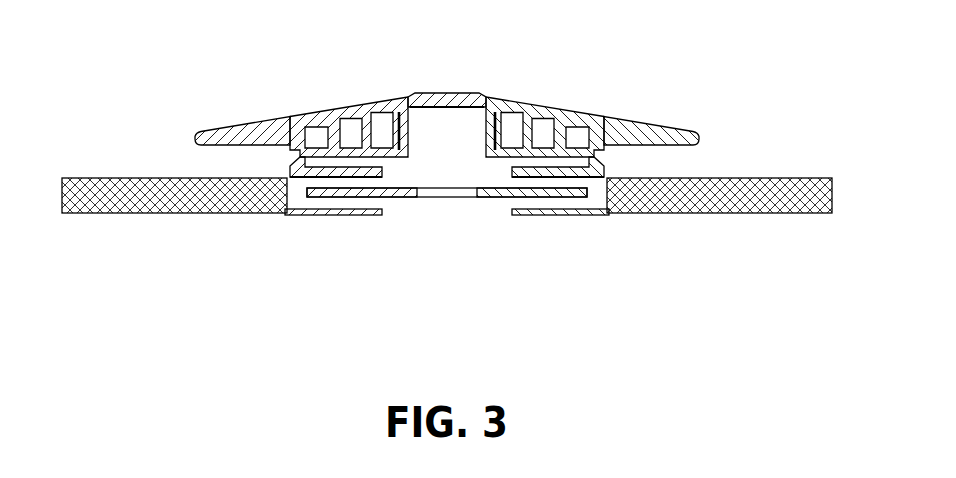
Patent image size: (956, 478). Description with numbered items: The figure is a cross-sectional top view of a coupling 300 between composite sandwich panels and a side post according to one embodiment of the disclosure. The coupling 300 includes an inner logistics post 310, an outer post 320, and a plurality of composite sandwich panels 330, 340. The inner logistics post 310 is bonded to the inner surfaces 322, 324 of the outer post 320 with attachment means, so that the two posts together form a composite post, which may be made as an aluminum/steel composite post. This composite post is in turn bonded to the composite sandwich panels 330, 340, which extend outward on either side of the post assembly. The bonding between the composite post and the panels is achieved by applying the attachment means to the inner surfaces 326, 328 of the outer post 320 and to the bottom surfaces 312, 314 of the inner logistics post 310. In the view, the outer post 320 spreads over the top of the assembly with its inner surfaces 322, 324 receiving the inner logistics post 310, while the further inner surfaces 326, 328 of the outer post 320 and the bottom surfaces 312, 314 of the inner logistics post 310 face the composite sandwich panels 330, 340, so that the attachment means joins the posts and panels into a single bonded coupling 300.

The coupling 300 is at (240, 55).
The inner logistics post 310 is at (440, 197).
The bottom surface of inner logistics post 312 is at (365, 197).
The bottom surface of inner logistics post 314 is at (515, 197).
The outer post 320 is at (532, 103).
The inner surface of outer post 322 is at (342, 177).
The inner surface of outer post 324 is at (547, 178).
The inner surface of outer post 326 is at (237, 147).
The inner surface of outer post 328 is at (638, 147).
The composite sandwich panel 330 is at (172, 217).
The composite sandwich panel 340 is at (693, 217).